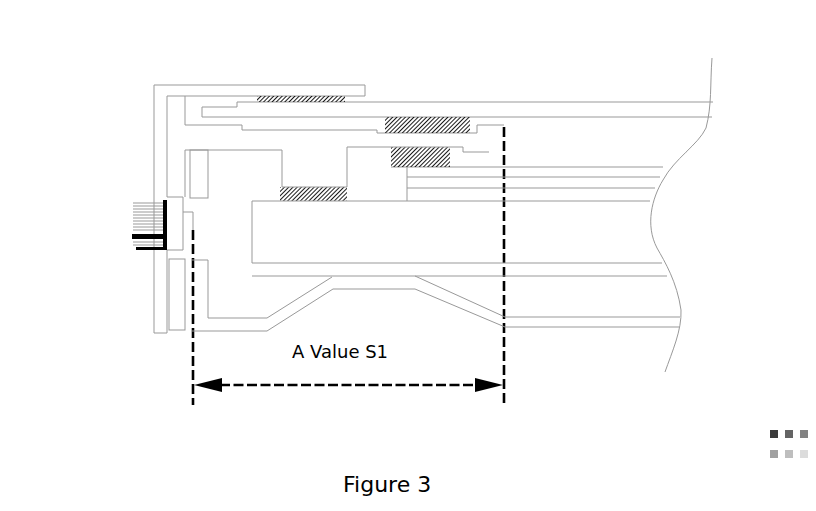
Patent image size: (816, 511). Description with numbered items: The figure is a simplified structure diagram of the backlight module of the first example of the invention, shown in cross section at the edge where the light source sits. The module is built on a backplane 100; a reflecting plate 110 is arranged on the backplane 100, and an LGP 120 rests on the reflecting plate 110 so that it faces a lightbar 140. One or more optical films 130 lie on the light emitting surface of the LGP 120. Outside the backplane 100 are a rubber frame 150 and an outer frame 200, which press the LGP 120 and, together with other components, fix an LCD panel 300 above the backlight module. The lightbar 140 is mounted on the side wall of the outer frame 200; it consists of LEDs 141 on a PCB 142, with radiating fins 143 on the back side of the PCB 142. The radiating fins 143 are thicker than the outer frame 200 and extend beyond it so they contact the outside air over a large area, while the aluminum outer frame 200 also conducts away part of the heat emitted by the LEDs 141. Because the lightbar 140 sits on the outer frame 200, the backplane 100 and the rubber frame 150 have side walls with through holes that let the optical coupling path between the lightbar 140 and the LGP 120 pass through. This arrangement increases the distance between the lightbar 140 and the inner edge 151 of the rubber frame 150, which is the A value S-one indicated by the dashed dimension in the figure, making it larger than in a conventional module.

The backplane 100 is at (206, 297).
The reflecting plate 110 is at (588, 274).
The LGP 120 is at (595, 227).
The optical film 130 is at (548, 178).
The lightbar 140 is at (102, 235).
The LED 141 is at (185, 228).
The PCB 142 is at (173, 203).
The radiating fin 143 is at (153, 232).
The rubber frame 150 is at (182, 132).
The inner edge 151 is at (489, 152).
The outer frame 200 is at (154, 117).
The LCD panel 300 is at (288, 112).